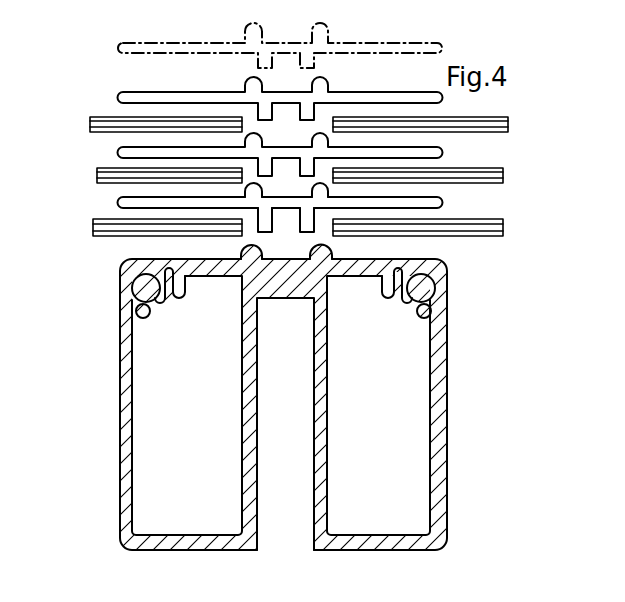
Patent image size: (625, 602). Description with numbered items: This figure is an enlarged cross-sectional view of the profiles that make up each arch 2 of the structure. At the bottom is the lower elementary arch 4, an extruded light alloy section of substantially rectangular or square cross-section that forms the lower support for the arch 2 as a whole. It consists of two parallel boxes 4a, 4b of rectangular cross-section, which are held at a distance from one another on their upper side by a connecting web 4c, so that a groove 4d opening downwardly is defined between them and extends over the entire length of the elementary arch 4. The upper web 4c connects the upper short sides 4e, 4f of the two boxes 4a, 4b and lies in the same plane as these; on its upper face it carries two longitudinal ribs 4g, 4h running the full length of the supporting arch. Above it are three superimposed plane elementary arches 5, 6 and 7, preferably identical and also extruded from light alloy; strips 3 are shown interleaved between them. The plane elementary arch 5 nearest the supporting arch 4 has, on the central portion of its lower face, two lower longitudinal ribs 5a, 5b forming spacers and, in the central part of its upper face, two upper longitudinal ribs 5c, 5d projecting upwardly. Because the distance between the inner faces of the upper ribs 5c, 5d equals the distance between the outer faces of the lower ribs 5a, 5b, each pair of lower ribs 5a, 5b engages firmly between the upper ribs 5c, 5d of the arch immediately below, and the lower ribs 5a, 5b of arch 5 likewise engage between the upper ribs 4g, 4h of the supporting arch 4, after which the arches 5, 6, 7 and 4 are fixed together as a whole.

The arch 2 is at (312, 303).
The flat strips 3 is at (90, 124).
The lower elementary arch 4 is at (312, 412).
The box 4a is at (127, 397).
The box 4b is at (443, 378).
The connecting web 4c is at (283, 293).
The groove 4d is at (283, 493).
The upper short side 4e is at (178, 282).
The upper short side 4f is at (380, 273).
The longitudinal rib 4g is at (224, 271).
The longitudinal rib 4h is at (337, 263).
The plane elementary arch 5 is at (257, 212).
The lower longitudinal rib 5a is at (258, 222).
The lower longitudinal rib 5b is at (300, 223).
The upper longitudinal rib 5c is at (258, 190).
The upper longitudinal rib 5d is at (318, 190).
The plane elementary arch 6 is at (118, 152).
The plane elementary arch 7 is at (118, 97).